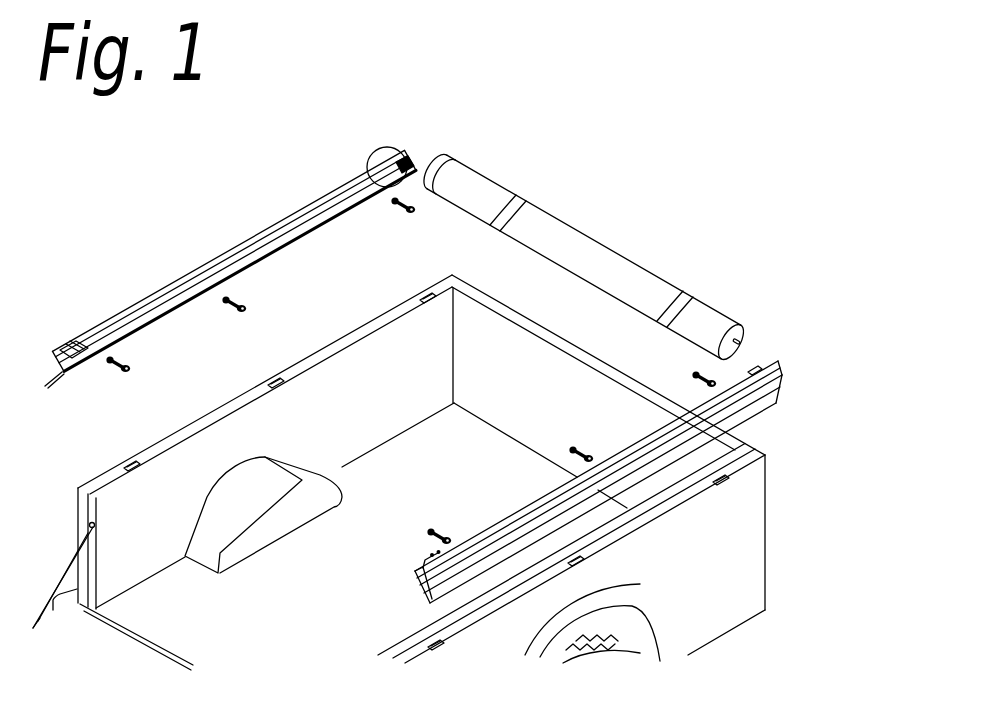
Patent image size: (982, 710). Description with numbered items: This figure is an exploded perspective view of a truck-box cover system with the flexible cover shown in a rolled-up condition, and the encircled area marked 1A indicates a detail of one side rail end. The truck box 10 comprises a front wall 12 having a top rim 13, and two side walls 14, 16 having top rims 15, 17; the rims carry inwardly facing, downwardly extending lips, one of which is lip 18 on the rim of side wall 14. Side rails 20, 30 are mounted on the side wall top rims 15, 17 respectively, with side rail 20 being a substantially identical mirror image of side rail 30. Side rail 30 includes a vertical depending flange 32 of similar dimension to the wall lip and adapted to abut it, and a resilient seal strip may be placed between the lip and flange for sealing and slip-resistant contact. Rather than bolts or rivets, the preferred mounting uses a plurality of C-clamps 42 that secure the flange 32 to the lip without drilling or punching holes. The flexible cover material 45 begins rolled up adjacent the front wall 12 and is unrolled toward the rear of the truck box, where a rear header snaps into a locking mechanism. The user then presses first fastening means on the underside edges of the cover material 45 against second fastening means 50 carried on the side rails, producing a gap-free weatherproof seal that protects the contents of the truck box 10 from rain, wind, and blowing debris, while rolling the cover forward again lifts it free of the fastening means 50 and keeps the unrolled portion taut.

The truck box 10 is at (800, 559).
The front wall 12 is at (554, 391).
The top rim 13 is at (593, 354).
The side wall 14 is at (358, 451).
The top rim 15 is at (195, 423).
The side wall 16 is at (735, 602).
The top rim 17 is at (668, 505).
The inwardly facing downwardly extending lip 18 is at (197, 436).
The side rail 20 is at (166, 313).
The side rail 30 is at (757, 400).
The vertical depending flange 32 is at (427, 587).
The C-clamps 42 is at (227, 306).
The flexible cover material 45 is at (637, 281).
The second fastening means 50 is at (780, 387).
The detail view reference 1A is at (387, 160).